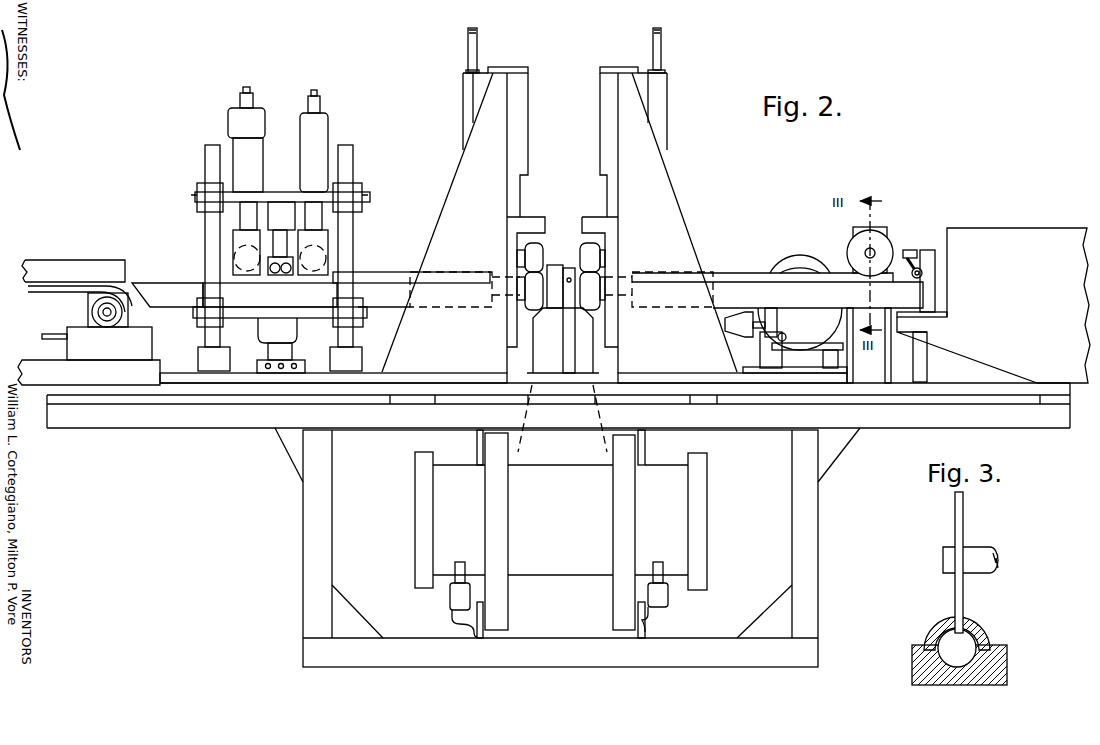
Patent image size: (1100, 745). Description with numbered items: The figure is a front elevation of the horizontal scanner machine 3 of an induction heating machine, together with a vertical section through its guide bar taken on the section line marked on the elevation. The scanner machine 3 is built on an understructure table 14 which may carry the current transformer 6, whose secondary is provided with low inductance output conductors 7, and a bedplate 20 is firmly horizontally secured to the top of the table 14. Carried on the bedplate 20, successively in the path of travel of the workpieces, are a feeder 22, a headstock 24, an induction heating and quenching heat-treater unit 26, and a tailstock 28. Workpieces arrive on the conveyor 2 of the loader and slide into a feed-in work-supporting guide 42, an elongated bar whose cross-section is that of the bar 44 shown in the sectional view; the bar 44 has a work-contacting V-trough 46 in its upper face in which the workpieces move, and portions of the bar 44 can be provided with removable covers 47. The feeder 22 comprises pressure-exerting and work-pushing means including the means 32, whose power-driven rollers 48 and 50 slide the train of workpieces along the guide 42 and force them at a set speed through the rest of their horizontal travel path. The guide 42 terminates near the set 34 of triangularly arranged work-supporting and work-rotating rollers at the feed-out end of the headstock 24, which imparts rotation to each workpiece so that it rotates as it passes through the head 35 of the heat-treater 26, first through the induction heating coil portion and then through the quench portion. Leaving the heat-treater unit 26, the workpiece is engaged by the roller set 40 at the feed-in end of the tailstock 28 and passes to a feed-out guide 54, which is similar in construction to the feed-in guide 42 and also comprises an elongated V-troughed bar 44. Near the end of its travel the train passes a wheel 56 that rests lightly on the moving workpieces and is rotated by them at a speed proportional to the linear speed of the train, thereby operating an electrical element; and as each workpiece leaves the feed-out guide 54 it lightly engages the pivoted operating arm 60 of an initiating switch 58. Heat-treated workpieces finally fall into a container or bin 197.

In FIG. 2, the conveyor 2 is at (55, 287).
In FIG. 2, the horizontal scanner machine 3 is at (566, 32).
In FIG. 2, the current transformer 6 is at (566, 531).
In FIG. 2, the low inductance output conductors 7 is at (566, 455).
In FIG. 2, the understructure table 14 is at (367, 496).
In FIG. 2, the bedplate 20 is at (213, 395).
In FIG. 2, the feeder 22 is at (292, 87).
In FIG. 2, the headstock 24 is at (438, 169).
In FIG. 2, the induction heating and quenching heat-treater unit 26 is at (557, 351).
In FIG. 2, the tailstock 28 is at (704, 176).
In FIG. 2, the pressure-exerting and work-pushing means 32 is at (228, 121).
In FIG. 2, the set of work-supporting and work-rotating rollers 34 is at (300, 121).
In FIG. 2, the head 35 is at (572, 253).
In FIG. 2, the set of rollers 40 is at (592, 260).
In FIG. 2, the feed-in work-supporting guide 42 is at (177, 290).
In FIG. 3, the bar 44 is at (1007, 666).
In FIG. 3, the V-trough 46 is at (952, 672).
In FIG. 2, the removable covers 47 is at (830, 278).
In FIG. 3, the removable covers 47 is at (975, 630).
In FIG. 2, the power-driven roller 48 is at (240, 240).
In FIG. 2, the power-driven roller 50 is at (320, 245).
In FIG. 2, the feed-out guide 54 is at (750, 290).
In FIG. 2, the wheel 56 is at (848, 247).
In FIG. 3, the wheel 56 is at (963, 520).
In FIG. 2, the initiating switch 58 is at (935, 258).
In FIG. 2, the pivoted operating arm 60 is at (918, 242).
In FIG. 2, the container or bin 197 is at (1002, 232).